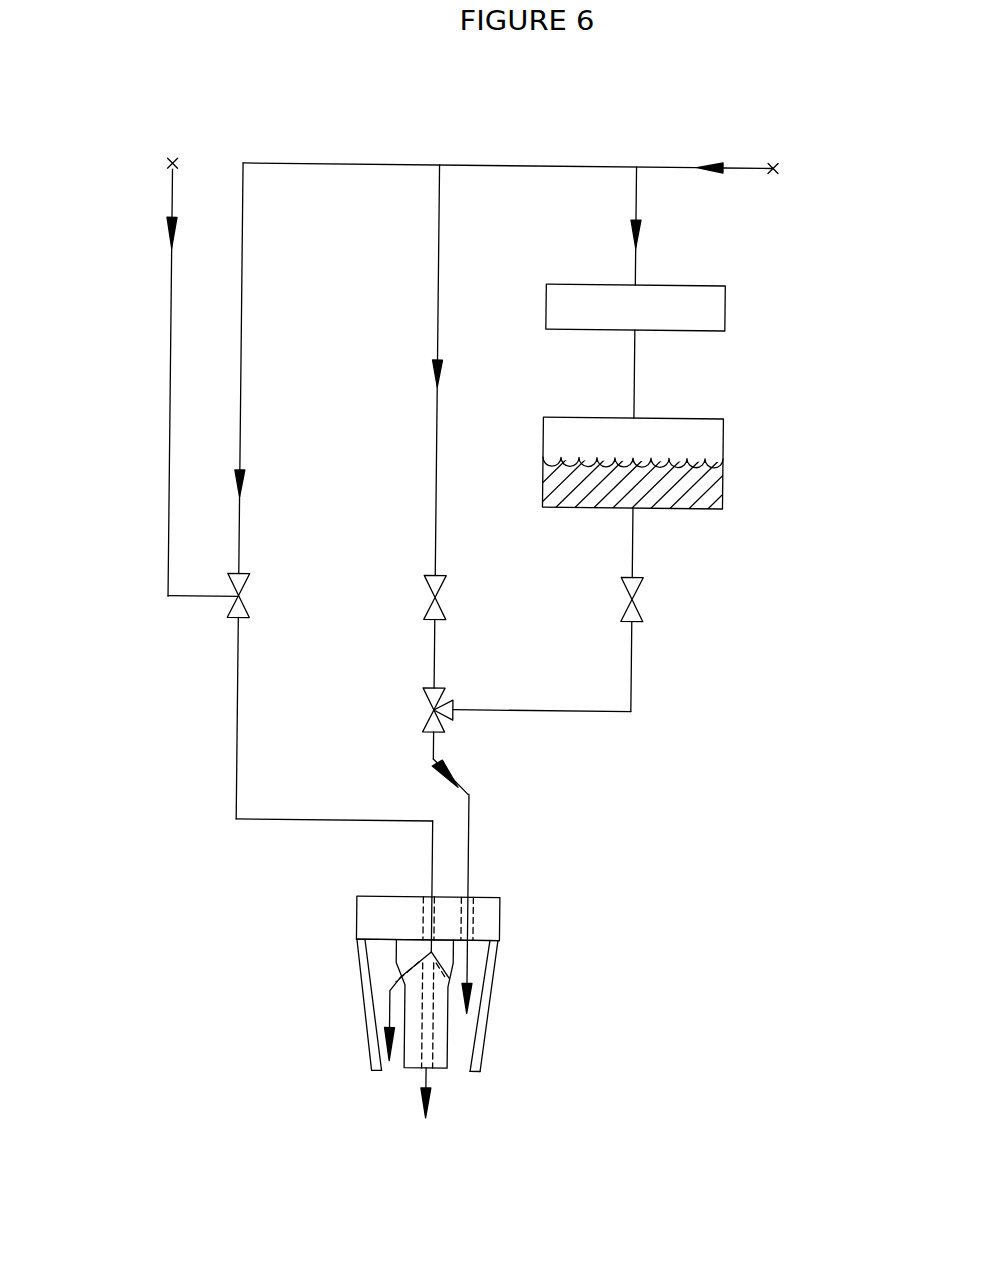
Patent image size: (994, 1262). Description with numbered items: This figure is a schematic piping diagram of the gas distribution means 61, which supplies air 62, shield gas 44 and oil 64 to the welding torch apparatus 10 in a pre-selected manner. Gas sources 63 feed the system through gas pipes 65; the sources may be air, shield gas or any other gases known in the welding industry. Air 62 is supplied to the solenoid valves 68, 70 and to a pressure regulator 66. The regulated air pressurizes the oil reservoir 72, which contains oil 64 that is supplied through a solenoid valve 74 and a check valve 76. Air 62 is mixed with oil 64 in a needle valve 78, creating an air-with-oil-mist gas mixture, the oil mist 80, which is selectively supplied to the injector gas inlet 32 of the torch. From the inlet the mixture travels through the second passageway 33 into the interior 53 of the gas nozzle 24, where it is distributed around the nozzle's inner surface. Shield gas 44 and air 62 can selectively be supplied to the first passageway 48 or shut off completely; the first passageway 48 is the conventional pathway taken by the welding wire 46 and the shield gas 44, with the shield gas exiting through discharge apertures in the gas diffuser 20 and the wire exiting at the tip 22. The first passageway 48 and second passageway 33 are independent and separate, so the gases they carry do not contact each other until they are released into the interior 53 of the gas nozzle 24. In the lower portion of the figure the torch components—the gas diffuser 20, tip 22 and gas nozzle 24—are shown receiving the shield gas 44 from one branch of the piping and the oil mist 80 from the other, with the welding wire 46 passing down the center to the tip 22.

The welding torch apparatus 10 is at (516, 983).
The gas diffuser 20 is at (407, 949).
The tip 22 is at (447, 1067).
The gas nozzle 24 is at (485, 1046).
The injector gas inlet 32 is at (476, 918).
The second passageway 33 is at (480, 916).
The shield gas 44 is at (391, 1003).
The welding wire 46 is at (428, 1076).
The first passageway 48 is at (426, 919).
The interior of gas nozzle 53 is at (472, 1029).
The gas distribution means 61 is at (798, 836).
The air 62 is at (810, 148).
The gas sources 63 is at (91, 127).
The oil 64 is at (696, 465).
The gas pipes 65 is at (632, 190).
The pressure regulator 66 is at (669, 308).
The solenoid valve 68 is at (446, 599).
The solenoid valve 70 is at (250, 601).
The pressurized oil reservoir 72 is at (675, 437).
The solenoid valve 74 is at (642, 604).
The check valve 76 is at (449, 717).
The needle valve 78 is at (424, 704).
The oil mist 80 is at (452, 776).